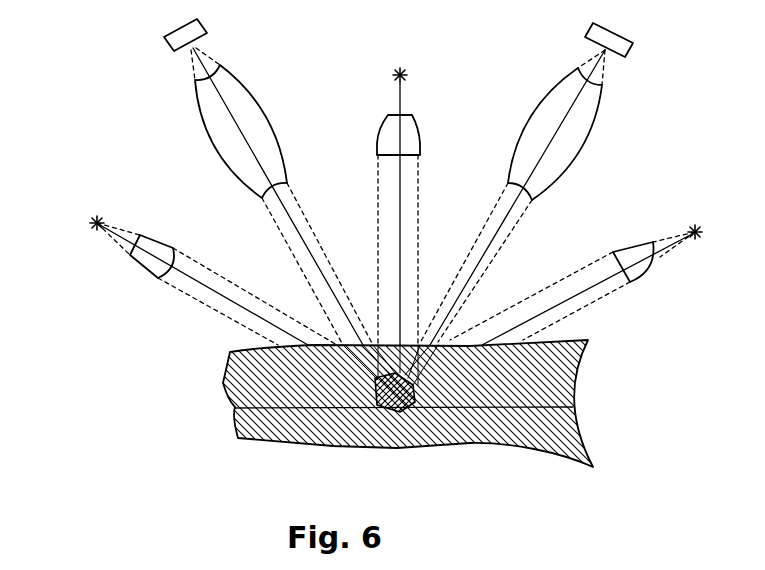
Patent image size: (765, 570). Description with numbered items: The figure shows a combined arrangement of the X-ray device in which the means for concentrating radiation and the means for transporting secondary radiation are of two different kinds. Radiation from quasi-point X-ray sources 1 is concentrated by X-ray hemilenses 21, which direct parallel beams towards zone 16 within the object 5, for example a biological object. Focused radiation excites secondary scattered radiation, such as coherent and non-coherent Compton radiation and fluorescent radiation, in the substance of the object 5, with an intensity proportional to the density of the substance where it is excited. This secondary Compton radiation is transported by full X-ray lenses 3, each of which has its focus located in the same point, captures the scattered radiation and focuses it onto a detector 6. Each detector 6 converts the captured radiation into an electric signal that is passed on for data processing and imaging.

The X-ray source 1 is at (93, 228).
The second X-ray lens 3 is at (215, 120).
The object 5 is at (225, 363).
The detector 6 is at (165, 38).
The zone 16 is at (235, 408).
The X-ray hemilens 21 is at (148, 262).